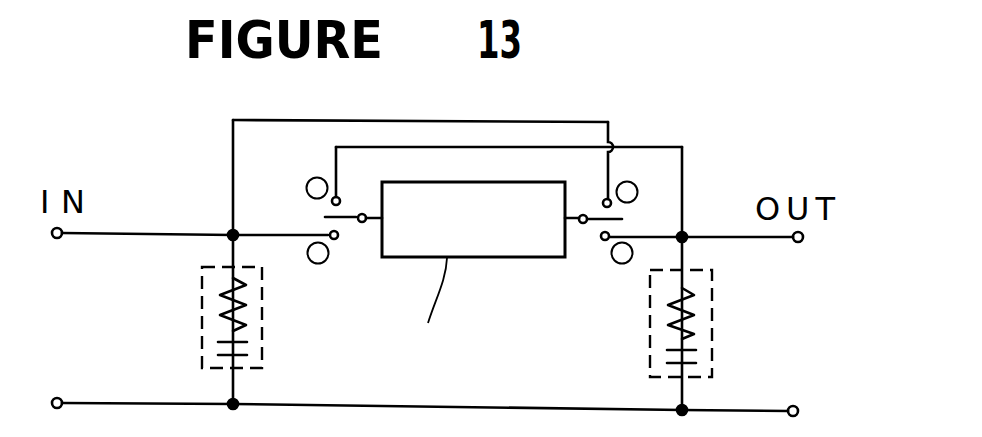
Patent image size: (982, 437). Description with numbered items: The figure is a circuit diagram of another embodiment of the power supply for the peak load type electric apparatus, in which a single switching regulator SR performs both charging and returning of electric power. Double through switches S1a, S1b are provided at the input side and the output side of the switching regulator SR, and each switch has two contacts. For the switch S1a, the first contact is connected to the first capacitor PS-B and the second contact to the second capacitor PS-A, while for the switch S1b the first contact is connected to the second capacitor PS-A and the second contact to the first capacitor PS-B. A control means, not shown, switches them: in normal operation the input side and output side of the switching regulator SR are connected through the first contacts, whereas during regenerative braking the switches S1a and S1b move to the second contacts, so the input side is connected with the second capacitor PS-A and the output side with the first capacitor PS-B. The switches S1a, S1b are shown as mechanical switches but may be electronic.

The switching regulator SR is at (482, 258).
The double through switch S1a is at (345, 223).
The double through switch S1b is at (594, 226).
The second capacitor PS-A is at (712, 317).
The first capacitor PS-B is at (203, 341).